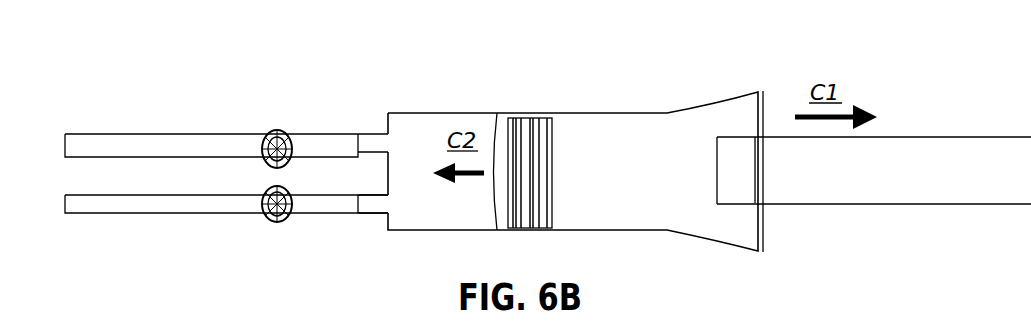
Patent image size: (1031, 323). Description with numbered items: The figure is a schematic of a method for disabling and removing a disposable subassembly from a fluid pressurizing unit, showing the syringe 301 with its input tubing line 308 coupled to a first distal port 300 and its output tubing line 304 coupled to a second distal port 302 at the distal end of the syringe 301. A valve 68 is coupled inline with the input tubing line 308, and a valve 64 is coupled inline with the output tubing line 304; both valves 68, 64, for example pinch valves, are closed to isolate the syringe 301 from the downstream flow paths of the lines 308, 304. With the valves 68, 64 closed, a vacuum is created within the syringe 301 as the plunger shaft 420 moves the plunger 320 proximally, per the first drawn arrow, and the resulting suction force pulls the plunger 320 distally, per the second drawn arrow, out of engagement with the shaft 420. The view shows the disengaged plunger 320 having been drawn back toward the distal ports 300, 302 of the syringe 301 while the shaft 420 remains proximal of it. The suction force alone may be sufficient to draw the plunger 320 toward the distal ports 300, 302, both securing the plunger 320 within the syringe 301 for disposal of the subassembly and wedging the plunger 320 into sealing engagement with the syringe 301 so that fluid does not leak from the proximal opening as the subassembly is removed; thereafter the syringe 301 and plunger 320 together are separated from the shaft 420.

The first distal port 300 is at (370, 140).
The syringe 301 is at (662, 86).
The second distal port 302 is at (375, 208).
The output tubing line 304 is at (203, 207).
The input tubing line 308 is at (193, 140).
The plunger 320 is at (528, 118).
The plunger shaft 420 is at (900, 150).
The valve 64 is at (277, 227).
The valve 68 is at (279, 130).